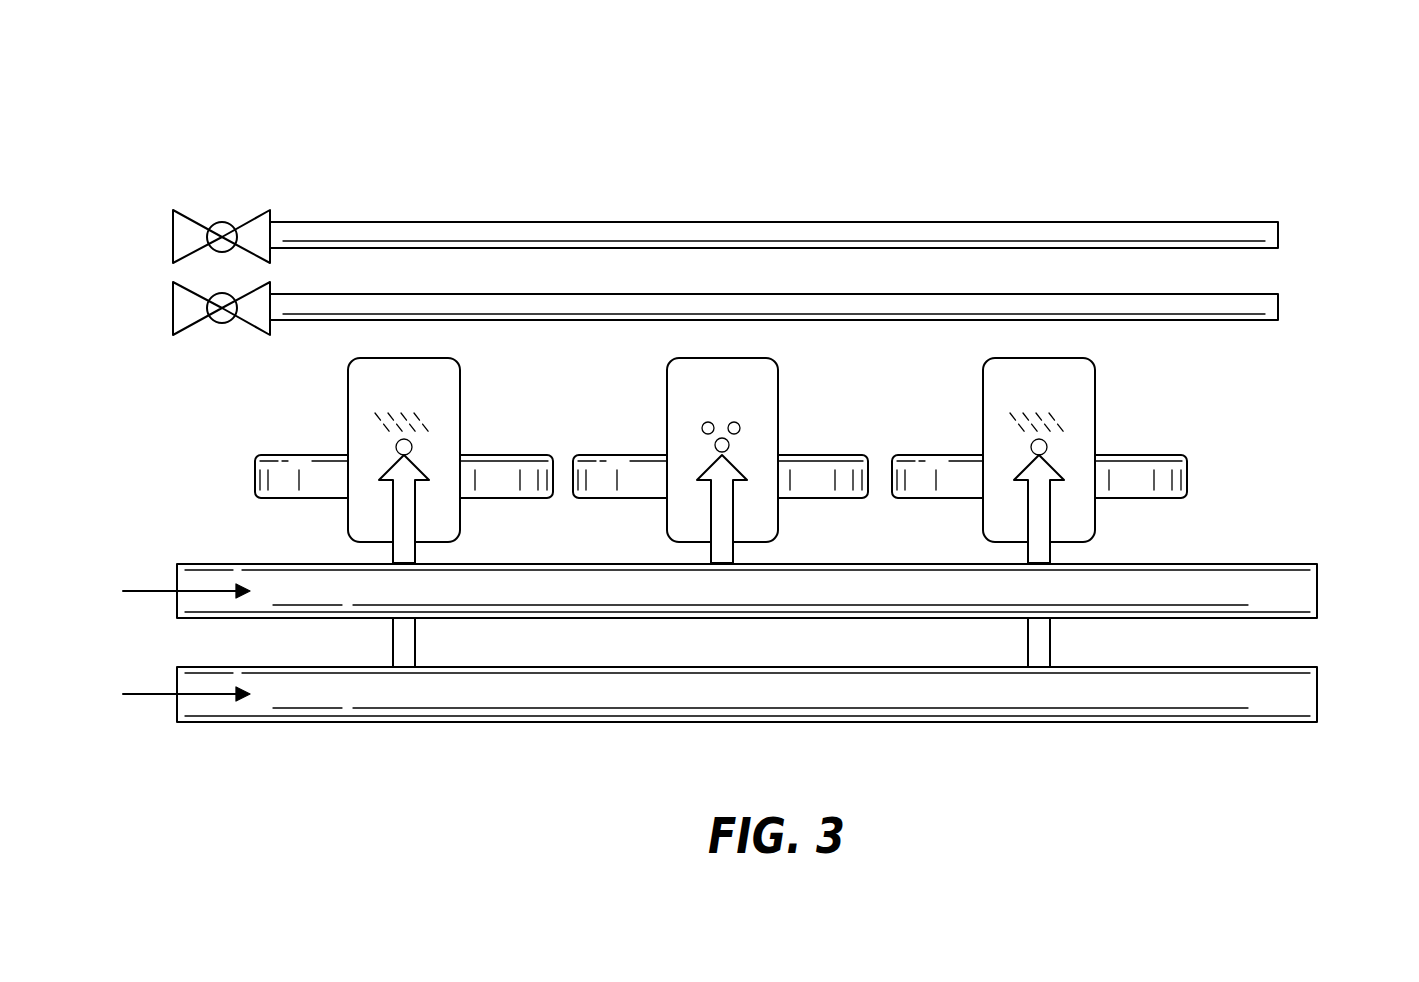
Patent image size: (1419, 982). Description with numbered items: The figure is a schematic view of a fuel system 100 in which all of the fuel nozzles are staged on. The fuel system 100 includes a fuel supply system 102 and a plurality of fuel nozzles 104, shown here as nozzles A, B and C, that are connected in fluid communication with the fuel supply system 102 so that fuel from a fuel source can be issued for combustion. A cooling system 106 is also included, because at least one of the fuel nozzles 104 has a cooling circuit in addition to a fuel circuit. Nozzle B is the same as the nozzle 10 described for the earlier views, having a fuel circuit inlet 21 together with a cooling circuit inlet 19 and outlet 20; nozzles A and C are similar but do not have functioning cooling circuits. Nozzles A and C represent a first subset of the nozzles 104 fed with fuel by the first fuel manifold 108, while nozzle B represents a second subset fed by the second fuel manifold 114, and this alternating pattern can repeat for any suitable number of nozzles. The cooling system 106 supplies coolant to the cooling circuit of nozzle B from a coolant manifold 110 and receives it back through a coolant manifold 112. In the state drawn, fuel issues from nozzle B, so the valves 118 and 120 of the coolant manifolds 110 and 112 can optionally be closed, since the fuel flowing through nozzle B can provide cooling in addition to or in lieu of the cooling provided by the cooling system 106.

The fuel system 100 is at (177, 130).
The fuel supply system 102 is at (1340, 560).
The fuel nozzles 104 is at (227, 355).
The cooling system 106 is at (1350, 210).
The fuel manifold 108 is at (871, 694).
The coolant manifold 110 is at (505, 305).
The coolant manifold 112 is at (505, 235).
The second fuel manifold 114 is at (871, 590).
The valve 118 is at (242, 297).
The valve 120 is at (242, 221).
The nozzle 10 is at (835, 397).
The inlet 19 is at (706, 421).
The outlet 20 is at (738, 421).
The fuel circuit inlet 21 is at (729, 450).